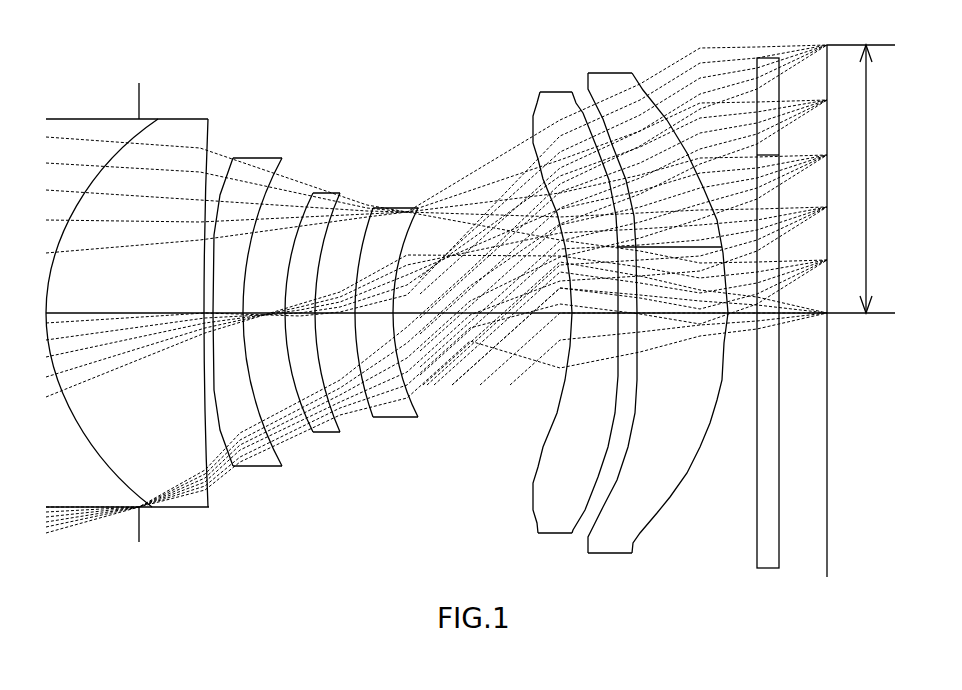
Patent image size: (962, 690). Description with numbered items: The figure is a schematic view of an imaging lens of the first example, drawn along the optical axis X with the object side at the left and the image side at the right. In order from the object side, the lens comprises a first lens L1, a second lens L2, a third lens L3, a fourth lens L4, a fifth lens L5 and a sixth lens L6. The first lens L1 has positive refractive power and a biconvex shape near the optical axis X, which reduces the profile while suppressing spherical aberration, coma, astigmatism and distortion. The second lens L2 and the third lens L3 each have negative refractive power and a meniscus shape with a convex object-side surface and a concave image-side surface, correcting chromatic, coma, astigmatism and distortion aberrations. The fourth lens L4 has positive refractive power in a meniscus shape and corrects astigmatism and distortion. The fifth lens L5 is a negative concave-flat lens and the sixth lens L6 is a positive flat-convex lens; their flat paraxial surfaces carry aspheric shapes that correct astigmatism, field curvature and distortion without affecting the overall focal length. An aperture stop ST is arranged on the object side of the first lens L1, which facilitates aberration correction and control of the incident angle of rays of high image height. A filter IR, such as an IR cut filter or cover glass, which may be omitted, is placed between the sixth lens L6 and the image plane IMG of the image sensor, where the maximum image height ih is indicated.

The first lens L1 is at (204, 117).
The second lens L2 is at (274, 157).
The third lens L3 is at (338, 192).
The fourth lens L4 is at (388, 207).
The fifth lens L5 is at (541, 91).
The sixth lens L6 is at (617, 73).
The aperture stop ST is at (139, 542).
The filter IR is at (757, 58).
The image plane IMG is at (827, 578).
The maximum image height ih is at (876, 179).
The optical axis X is at (107, 313).